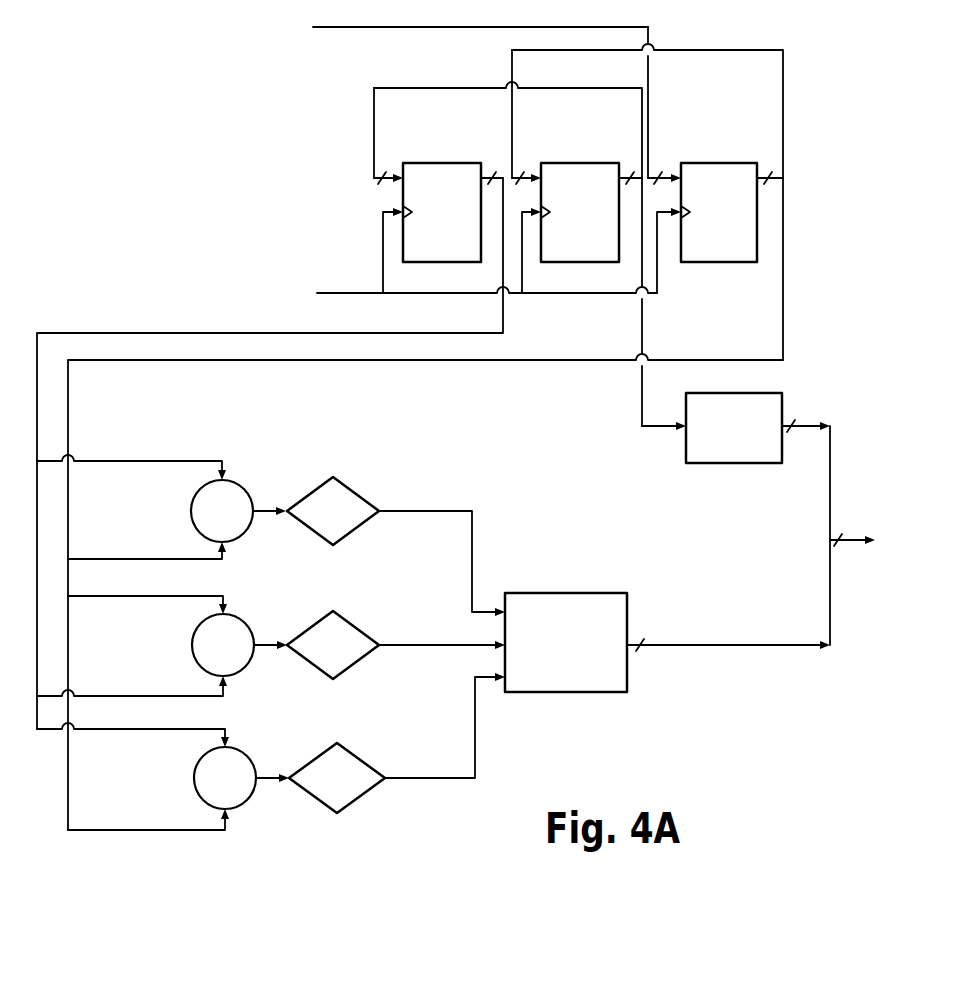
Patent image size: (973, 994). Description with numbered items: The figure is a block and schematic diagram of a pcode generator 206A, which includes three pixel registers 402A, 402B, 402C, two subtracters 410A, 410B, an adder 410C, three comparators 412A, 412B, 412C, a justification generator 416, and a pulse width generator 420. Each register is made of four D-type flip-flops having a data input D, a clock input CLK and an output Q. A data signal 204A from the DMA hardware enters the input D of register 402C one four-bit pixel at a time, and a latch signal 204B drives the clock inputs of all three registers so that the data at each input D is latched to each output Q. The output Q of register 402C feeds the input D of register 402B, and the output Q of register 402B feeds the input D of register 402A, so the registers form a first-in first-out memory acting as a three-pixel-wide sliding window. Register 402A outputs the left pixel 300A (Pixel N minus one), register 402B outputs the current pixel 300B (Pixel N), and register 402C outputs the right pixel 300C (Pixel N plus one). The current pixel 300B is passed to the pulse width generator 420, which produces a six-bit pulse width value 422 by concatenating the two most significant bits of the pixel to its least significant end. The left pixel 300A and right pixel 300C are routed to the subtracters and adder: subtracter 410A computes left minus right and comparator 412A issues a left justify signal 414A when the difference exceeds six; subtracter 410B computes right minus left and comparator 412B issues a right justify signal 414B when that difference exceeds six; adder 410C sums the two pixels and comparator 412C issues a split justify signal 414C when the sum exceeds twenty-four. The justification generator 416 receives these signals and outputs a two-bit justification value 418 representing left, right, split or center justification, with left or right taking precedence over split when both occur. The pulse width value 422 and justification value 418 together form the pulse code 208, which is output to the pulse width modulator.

The pcode generator 206A is at (186, 104).
The data signal 204A is at (383, 28).
The latch signal 204B is at (350, 292).
The left pixel 300A is at (503, 312).
The current pixel 300B is at (645, 310).
The right pixel 300C is at (783, 312).
The pixel N−1 register 402A is at (462, 262).
The pixel N register 402B is at (600, 262).
The pixel N+1 register 402C is at (740, 262).
The subtracter 410A is at (232, 483).
The subtracter 410B is at (233, 618).
The adder 410C is at (236, 751).
The comparator 412A is at (343, 474).
The comparator 412B is at (342, 608).
The comparator 412C is at (348, 745).
The left justify signal 414A is at (472, 520).
The right justify signal 414B is at (448, 648).
The split justify signal 414C is at (448, 780).
The justification generator 416 is at (540, 593).
The justification value 418 is at (678, 645).
The pulse width generator 420 is at (770, 392).
The pulse width value 422 is at (805, 423).
The pulse code 208 is at (850, 535).